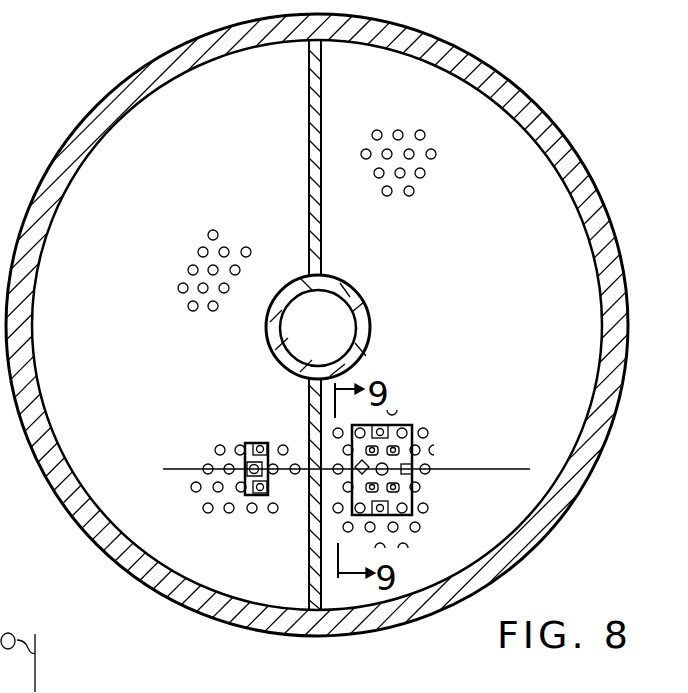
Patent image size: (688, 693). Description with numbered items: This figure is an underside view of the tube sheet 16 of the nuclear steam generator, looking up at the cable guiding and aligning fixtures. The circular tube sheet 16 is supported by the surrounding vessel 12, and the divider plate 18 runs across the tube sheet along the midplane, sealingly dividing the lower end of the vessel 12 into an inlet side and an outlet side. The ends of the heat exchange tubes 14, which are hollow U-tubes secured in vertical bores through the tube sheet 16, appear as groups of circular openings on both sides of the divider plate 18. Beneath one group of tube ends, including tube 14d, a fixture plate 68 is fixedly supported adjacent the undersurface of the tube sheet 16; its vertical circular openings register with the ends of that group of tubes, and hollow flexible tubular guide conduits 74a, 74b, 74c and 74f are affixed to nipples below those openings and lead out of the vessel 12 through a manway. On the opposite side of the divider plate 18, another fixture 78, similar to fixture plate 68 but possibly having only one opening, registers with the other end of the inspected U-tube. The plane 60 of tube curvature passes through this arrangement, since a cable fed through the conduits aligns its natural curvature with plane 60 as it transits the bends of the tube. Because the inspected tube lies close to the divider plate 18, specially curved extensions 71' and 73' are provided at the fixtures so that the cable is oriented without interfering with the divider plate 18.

The vessel 12 is at (566, 143).
The tube sheet 16 is at (496, 123).
The divider plate 18 is at (310, 85).
The heat exchange tubes 14 is at (394, 131).
The tube 14d is at (362, 465).
The plane of tube curvature 60 is at (175, 468).
The fixture plate 68 is at (397, 423).
The fixture 78 is at (252, 445).
The extension 73' is at (226, 443).
The extension 71' is at (316, 486).
The guide conduit 74a is at (410, 473).
The guide conduit 74b is at (403, 493).
The guide conduit 74c is at (385, 500).
The guide conduit 74f is at (405, 448).